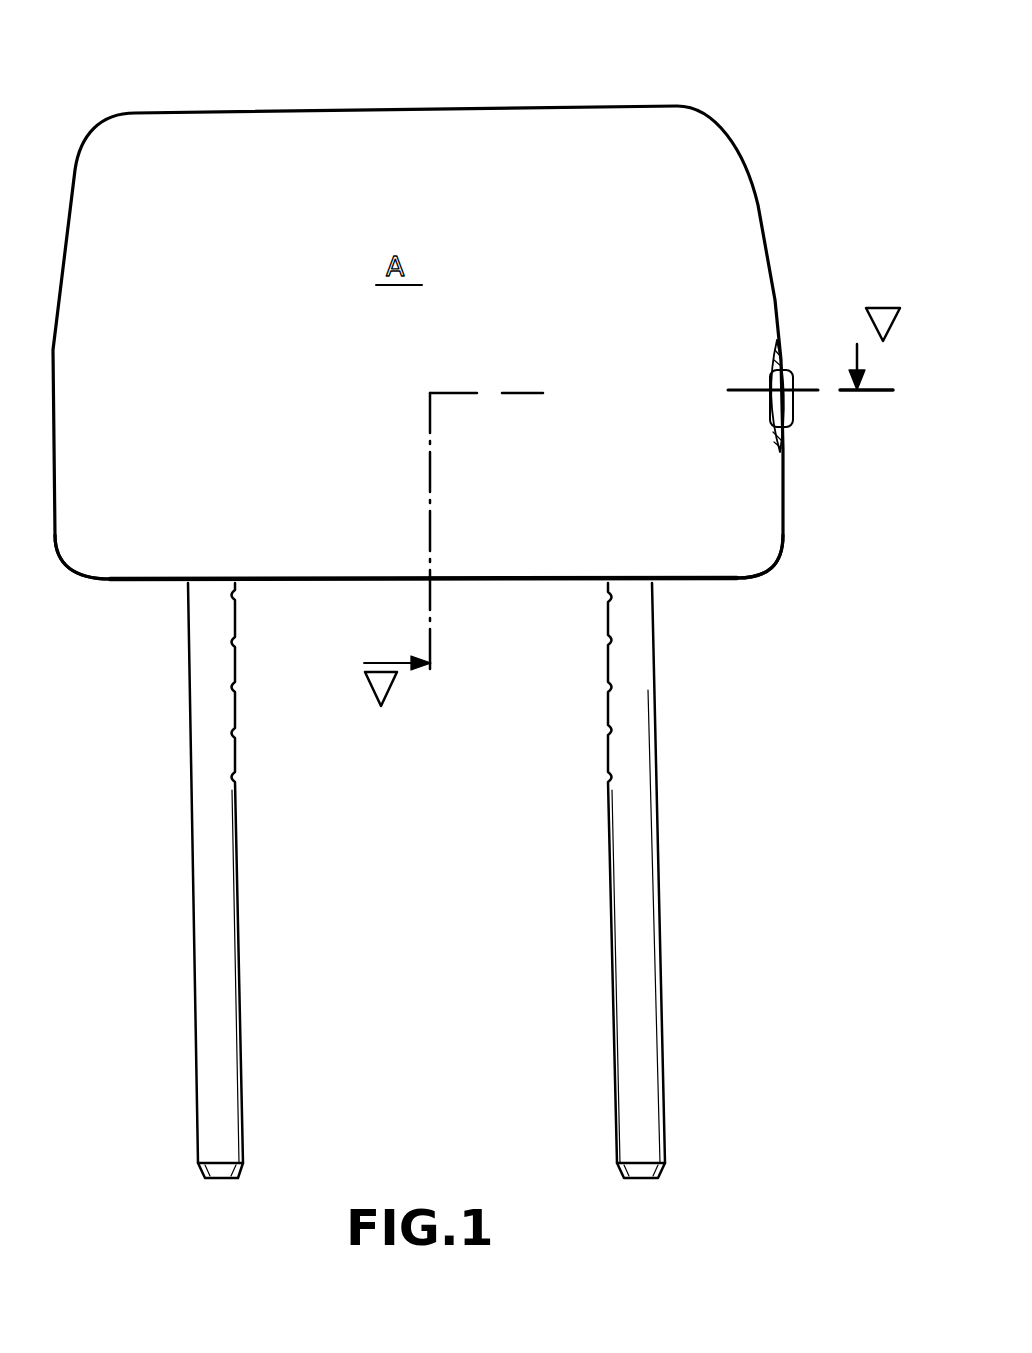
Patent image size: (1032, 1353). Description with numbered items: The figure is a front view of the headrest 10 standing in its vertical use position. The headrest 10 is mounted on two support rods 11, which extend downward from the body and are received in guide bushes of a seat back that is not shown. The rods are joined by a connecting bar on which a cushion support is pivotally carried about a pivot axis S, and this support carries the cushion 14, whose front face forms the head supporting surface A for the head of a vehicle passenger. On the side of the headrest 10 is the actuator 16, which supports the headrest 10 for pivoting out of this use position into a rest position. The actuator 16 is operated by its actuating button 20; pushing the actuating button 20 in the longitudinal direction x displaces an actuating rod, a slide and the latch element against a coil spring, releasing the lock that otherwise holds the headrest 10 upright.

The headrest 10 is at (728, 96).
The support rods 11 is at (208, 975).
The cushion 14 is at (110, 548).
The actuator 16 is at (800, 400).
The actuating button 20 is at (786, 418).